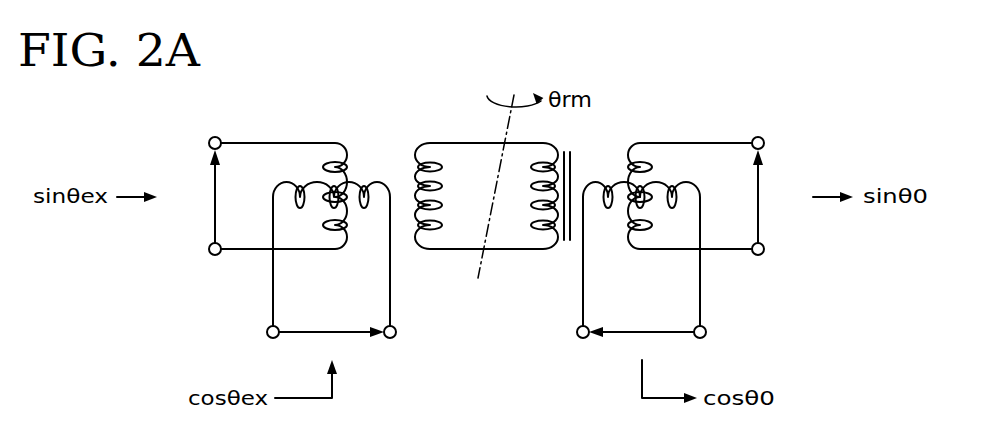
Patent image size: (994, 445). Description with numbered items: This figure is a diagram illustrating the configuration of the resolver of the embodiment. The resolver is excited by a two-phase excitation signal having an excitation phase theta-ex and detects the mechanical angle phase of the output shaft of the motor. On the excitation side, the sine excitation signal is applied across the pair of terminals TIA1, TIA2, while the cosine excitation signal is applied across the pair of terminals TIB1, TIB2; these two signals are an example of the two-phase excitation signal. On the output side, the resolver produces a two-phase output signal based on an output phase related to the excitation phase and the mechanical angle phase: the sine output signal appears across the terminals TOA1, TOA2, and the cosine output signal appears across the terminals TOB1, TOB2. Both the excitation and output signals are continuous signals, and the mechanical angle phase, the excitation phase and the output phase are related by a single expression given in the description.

The excitation sine winding terminal 1 TIA1 is at (185, 143).
The excitation sine winding terminal 2 TIA2 is at (185, 249).
The excitation cosine winding terminal 1 TIB1 is at (389, 347).
The excitation cosine winding terminal 2 TIB2 is at (272, 347).
The output sine winding terminal 1 TOA1 is at (787, 143).
The output sine winding terminal 2 TOA2 is at (787, 249).
The output cosine winding terminal 1 TOB1 is at (582, 347).
The output cosine winding terminal 2 TOB2 is at (700, 347).